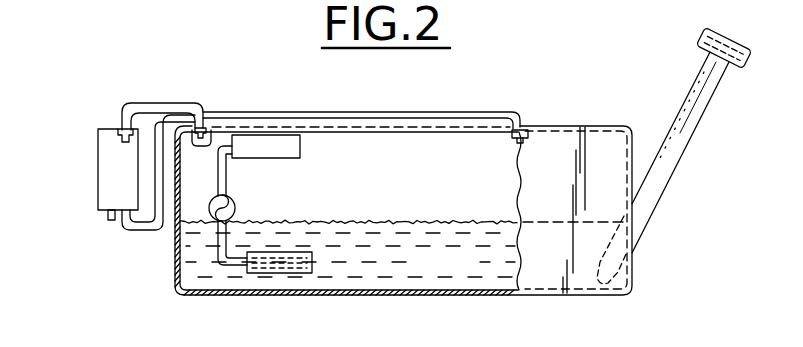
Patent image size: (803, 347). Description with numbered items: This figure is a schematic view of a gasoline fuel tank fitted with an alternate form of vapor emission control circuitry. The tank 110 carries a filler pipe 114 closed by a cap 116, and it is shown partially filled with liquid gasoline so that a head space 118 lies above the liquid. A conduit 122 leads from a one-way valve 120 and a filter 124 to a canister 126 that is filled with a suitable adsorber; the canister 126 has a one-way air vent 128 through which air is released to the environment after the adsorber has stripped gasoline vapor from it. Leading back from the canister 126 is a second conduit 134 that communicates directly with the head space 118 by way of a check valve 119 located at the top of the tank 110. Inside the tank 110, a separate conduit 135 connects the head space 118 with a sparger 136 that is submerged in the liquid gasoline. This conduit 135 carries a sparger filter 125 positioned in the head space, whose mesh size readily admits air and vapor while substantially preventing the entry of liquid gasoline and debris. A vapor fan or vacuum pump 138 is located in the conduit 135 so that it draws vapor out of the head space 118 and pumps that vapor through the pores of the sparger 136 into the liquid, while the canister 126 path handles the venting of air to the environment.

The tank 110 is at (580, 125).
The filler pipe 114 is at (684, 146).
The cap 116 is at (735, 32).
The head space 118 is at (475, 198).
The check valve 119 is at (510, 141).
The one-way valve 120 is at (252, 72).
The conduit 122 is at (181, 101).
The filter 124 is at (209, 134).
The sparger filter 125 is at (300, 152).
The canister 126 is at (108, 163).
The one-way air vent 128 is at (108, 222).
The conduit 134 is at (450, 113).
The conduit 135 is at (226, 183).
The sparger 136 is at (312, 262).
The vapor fan or vacuum pump 138 is at (236, 208).